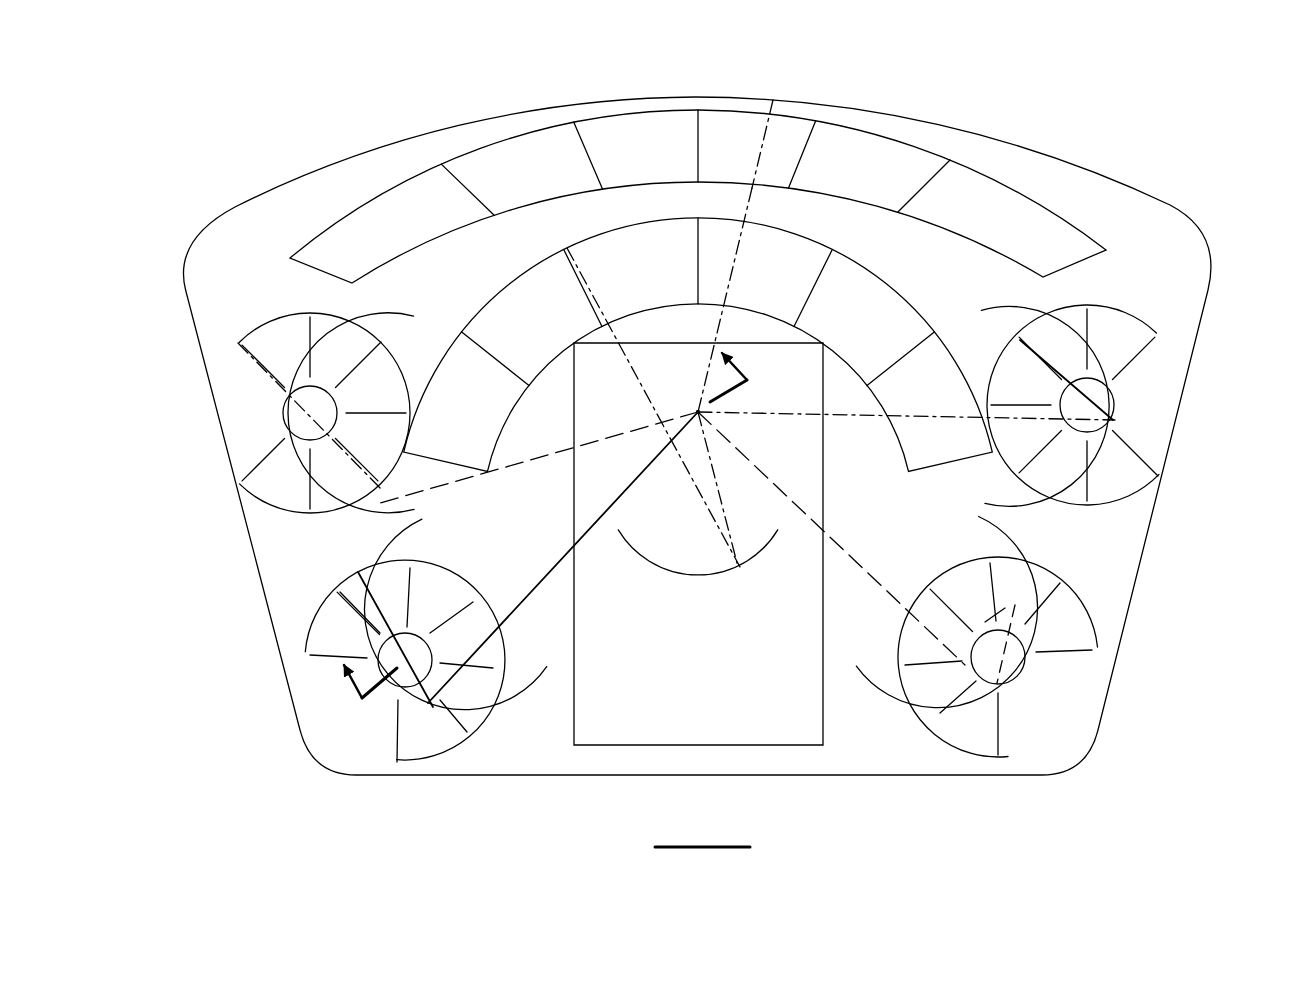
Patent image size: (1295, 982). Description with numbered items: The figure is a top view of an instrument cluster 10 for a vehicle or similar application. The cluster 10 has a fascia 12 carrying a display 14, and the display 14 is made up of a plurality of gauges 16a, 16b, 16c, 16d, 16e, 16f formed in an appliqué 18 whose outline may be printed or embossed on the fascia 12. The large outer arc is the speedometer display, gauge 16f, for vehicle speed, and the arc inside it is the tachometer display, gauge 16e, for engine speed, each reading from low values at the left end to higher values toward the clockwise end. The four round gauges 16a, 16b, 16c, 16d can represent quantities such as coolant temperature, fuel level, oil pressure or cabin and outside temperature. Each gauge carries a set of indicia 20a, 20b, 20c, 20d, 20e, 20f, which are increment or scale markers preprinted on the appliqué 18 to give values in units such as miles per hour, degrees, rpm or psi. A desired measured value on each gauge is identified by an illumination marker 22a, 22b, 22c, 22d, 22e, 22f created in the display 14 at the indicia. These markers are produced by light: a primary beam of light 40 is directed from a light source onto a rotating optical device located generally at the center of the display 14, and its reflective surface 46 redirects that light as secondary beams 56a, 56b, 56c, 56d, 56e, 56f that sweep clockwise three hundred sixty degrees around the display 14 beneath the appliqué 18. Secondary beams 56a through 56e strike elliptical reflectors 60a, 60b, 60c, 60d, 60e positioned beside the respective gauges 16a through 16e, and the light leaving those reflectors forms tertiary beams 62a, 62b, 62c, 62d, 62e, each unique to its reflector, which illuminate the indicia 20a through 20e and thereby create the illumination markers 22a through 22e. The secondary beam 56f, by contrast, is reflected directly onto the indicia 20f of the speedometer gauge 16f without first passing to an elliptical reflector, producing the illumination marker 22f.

The instrument cluster 10 is at (1147, 155).
The fascia 12 is at (1172, 245).
The display 14 is at (247, 267).
The appliqué 18 is at (1170, 308).
The gauge 16a is at (252, 430).
The gauge 16b is at (1152, 390).
The gauge 16c is at (1065, 683).
The gauge 16d is at (355, 732).
The gauge (tachometer display) 16e is at (478, 300).
The gauge (speedometer display) 16f is at (533, 125).
The indicia 20a is at (378, 360).
The indicia 20b is at (1148, 452).
The indicia 20c is at (942, 728).
The indicia 20d is at (397, 745).
The indicia 20e is at (487, 365).
The indicia 20f is at (693, 142).
The illumination marker 22a is at (240, 352).
The illumination marker 22b is at (1010, 345).
The illumination marker 22c is at (1013, 592).
The illumination marker 22d is at (360, 583).
The illumination marker 22e is at (568, 255).
The illumination marker 22f is at (763, 137).
The incident or primary beam of light 40 is at (705, 415).
The reflective surface 46 is at (698, 412).
The secondary beam 56a is at (515, 468).
The secondary beam 56b is at (855, 415).
The secondary beam 56c is at (800, 515).
The secondary beam 56d is at (598, 520).
The secondary beam 56e is at (728, 525).
The secondary beam 56f is at (758, 197).
The elliptical reflector 60a is at (390, 310).
The elliptical reflector 60b is at (983, 308).
The elliptical reflector 60c is at (856, 668).
The elliptical reflector 60d is at (548, 673).
The elliptical reflector 60e is at (700, 577).
The tertiary beam 62a is at (362, 503).
The tertiary beam 62b is at (1022, 350).
The tertiary beam 62c is at (1013, 600).
The tertiary beam 62d is at (380, 606).
The tertiary beam 62e is at (617, 350).